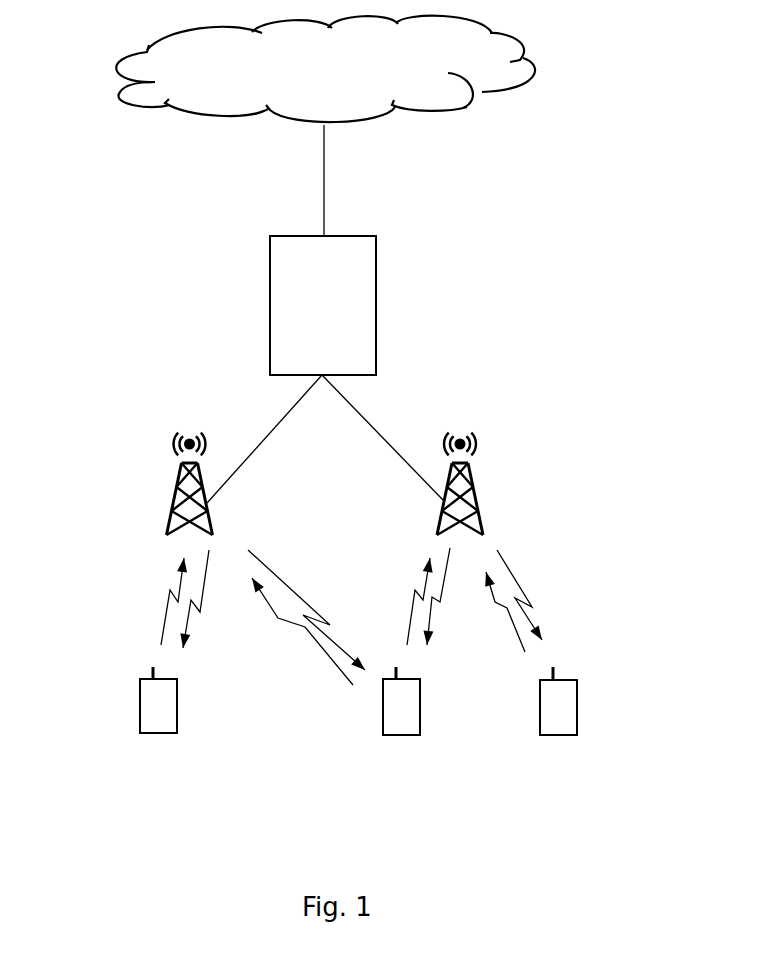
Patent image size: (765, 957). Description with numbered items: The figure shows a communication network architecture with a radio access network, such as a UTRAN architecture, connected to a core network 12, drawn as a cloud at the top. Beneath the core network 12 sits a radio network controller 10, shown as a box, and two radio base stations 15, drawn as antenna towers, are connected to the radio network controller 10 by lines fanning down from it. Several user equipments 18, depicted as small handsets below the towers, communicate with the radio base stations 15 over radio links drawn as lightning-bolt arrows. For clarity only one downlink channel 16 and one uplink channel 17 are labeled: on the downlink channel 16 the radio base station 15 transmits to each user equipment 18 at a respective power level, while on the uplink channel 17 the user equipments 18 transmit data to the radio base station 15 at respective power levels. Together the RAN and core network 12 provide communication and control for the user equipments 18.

The radio network controller 10 is at (376, 297).
The core network 12 is at (535, 58).
The radio base station 15 is at (174, 493).
The downlink channel 16 is at (263, 559).
The uplink channel 17 is at (167, 602).
The user equipment 18 is at (140, 702).